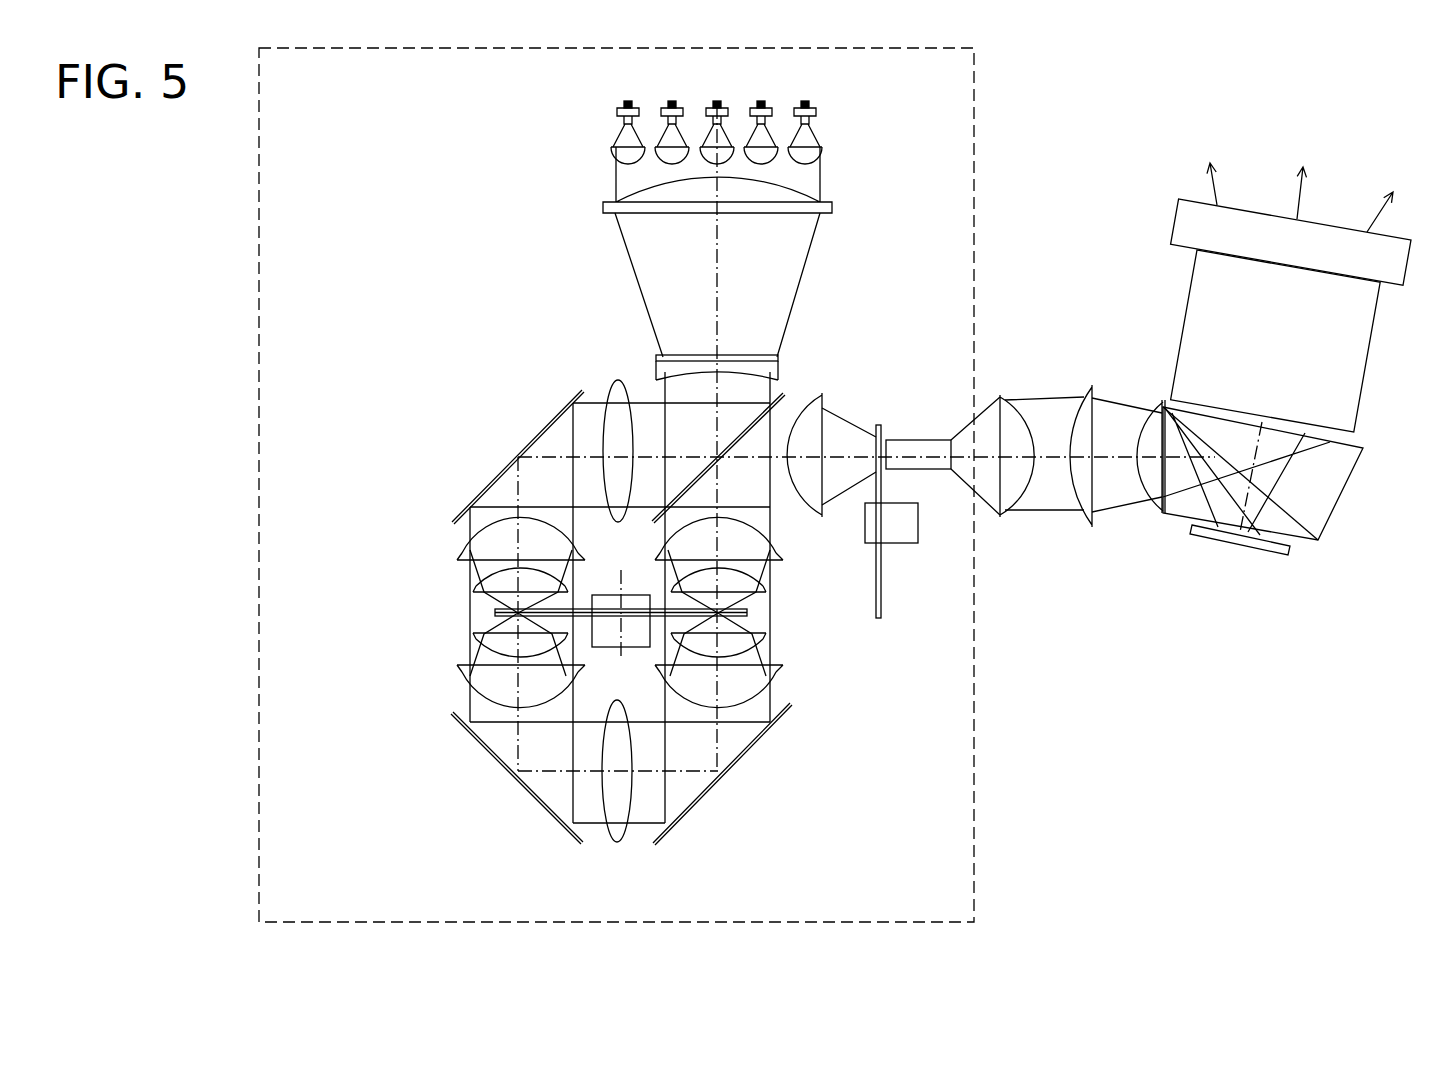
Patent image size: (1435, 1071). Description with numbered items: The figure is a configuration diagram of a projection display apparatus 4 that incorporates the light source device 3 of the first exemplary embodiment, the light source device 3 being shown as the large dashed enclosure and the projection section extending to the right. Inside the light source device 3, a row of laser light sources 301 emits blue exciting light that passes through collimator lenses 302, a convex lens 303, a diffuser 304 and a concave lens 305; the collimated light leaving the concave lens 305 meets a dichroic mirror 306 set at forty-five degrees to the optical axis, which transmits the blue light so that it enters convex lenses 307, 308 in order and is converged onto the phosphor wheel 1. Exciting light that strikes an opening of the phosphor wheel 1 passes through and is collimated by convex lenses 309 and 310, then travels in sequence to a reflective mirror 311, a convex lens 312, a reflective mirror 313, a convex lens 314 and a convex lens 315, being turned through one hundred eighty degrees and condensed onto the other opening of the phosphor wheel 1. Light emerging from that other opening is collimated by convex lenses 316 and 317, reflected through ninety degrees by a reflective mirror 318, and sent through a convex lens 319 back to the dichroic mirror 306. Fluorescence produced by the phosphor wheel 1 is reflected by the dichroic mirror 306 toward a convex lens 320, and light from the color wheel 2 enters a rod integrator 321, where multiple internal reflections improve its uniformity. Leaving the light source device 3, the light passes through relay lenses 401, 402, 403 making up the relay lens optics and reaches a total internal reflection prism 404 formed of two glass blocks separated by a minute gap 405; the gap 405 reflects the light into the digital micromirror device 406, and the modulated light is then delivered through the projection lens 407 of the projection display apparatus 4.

The phosphor wheel 1 is at (496, 614).
The color wheel 2 is at (882, 600).
The light source device 3 is at (246, 249).
The projection display apparatus 4 is at (1347, 147).
The laser light sources 301 is at (810, 107).
The collimator lenses 302 is at (812, 153).
The convex lens 303 is at (805, 198).
The diffuser 304 is at (733, 357).
The concave lens 305 is at (777, 367).
The dichroic mirror 306 is at (781, 391).
The convex lens 307 is at (753, 547).
The convex lens 308 is at (757, 588).
The convex lens 309 is at (760, 637).
The convex lens 310 is at (757, 672).
The reflective mirror 311 is at (760, 733).
The convex lens 312 is at (615, 830).
The reflective mirror 313 is at (530, 787).
The convex lens 314 is at (460, 672).
The convex lens 315 is at (478, 637).
The convex lens 316 is at (478, 587).
The convex lens 317 is at (462, 550).
The reflective mirror 318 is at (507, 463).
The convex lens 319 is at (605, 385).
The convex lens 320 is at (820, 396).
The rod integrator 321 is at (928, 447).
The relay lens 401 is at (1010, 395).
The relay lens 402 is at (1083, 523).
The relay lens 403 is at (1155, 405).
The total internal reflection prism 404 is at (1335, 465).
The minute gap 405 is at (1303, 527).
The digital micromirror device 406 is at (1232, 537).
The projection lens 407 is at (1182, 332).